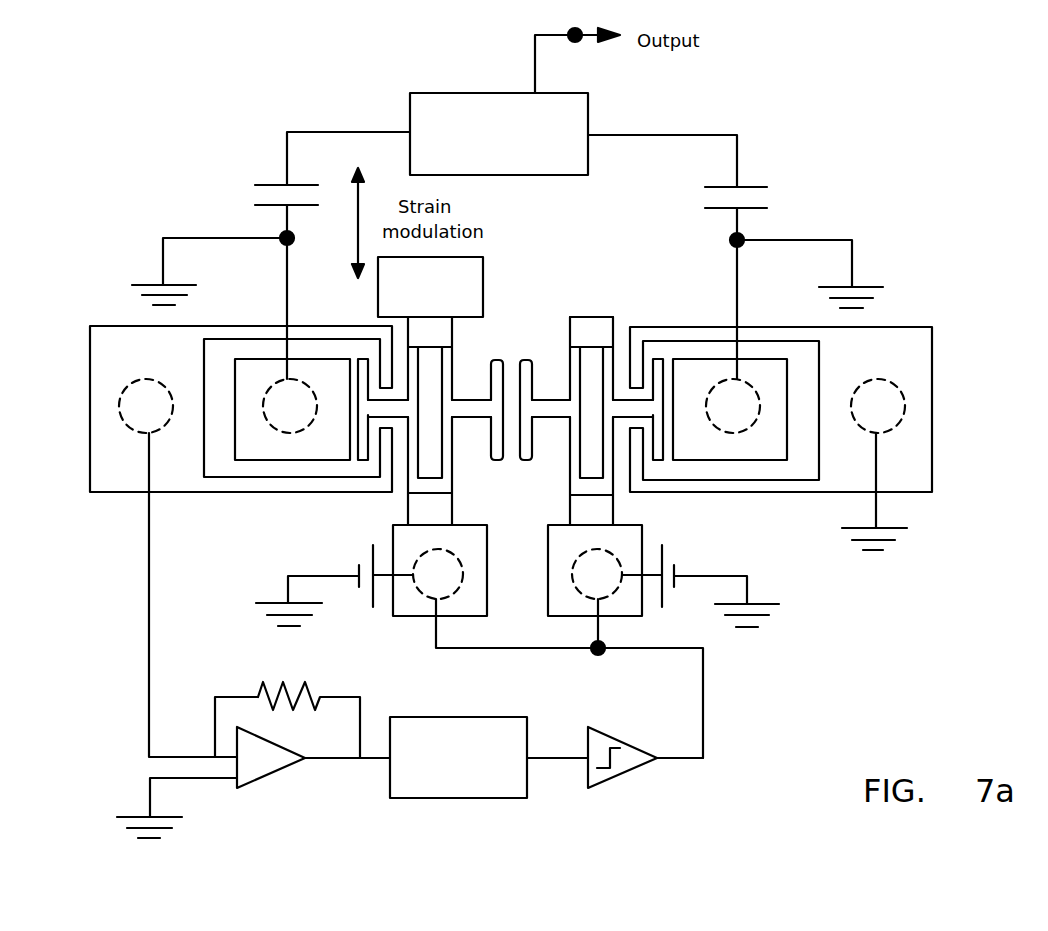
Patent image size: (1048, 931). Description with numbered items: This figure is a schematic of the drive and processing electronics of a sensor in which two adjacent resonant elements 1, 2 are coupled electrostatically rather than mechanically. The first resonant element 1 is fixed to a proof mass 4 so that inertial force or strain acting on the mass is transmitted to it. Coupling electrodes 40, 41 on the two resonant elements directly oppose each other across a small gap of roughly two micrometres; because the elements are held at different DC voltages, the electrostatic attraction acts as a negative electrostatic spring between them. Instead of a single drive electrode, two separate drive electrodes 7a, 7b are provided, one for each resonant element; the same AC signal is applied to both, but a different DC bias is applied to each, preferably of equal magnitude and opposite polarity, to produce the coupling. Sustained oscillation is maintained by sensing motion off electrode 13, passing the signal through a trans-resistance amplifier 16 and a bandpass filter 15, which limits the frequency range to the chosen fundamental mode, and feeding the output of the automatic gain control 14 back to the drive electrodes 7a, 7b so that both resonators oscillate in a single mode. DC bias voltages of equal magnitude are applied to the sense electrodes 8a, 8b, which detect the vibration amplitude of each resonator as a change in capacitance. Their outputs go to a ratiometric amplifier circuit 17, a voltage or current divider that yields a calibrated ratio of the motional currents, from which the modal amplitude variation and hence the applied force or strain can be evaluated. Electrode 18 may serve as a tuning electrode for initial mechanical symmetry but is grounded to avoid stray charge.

The first resonant element 1 is at (447, 468).
The second resonant element 2 is at (570, 468).
The proof mass 4 is at (472, 274).
The first drive electrode 7a is at (415, 608).
The second drive electrode 7b is at (570, 603).
The first sense electrode 8a is at (268, 448).
The second sense electrode 8b is at (745, 450).
The sensing electrode 13 is at (120, 468).
The automatic gain control 14 is at (618, 766).
The bandpass filter 15 is at (452, 788).
The trans-resistance amplifier 16 is at (255, 768).
The ratiometric amplifier circuit 17 is at (573, 117).
The tuning electrode 18 is at (913, 463).
The first coupling electrode 40 is at (496, 364).
The second coupling electrode 41 is at (528, 365).